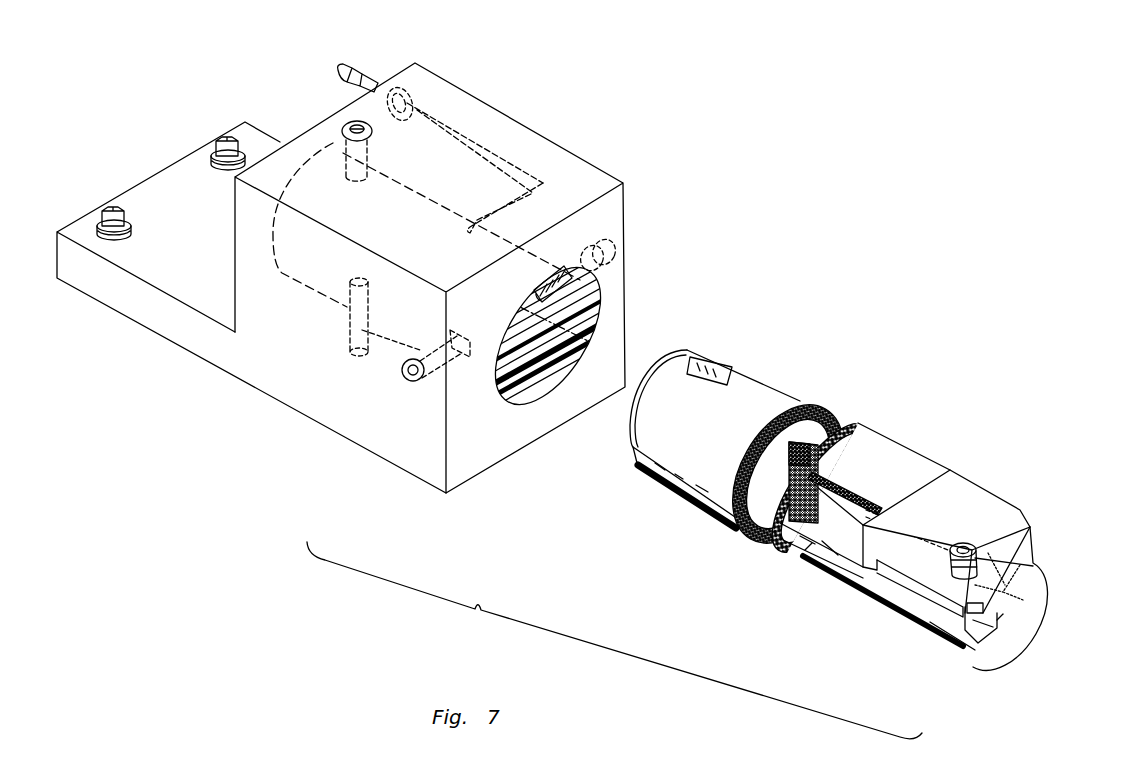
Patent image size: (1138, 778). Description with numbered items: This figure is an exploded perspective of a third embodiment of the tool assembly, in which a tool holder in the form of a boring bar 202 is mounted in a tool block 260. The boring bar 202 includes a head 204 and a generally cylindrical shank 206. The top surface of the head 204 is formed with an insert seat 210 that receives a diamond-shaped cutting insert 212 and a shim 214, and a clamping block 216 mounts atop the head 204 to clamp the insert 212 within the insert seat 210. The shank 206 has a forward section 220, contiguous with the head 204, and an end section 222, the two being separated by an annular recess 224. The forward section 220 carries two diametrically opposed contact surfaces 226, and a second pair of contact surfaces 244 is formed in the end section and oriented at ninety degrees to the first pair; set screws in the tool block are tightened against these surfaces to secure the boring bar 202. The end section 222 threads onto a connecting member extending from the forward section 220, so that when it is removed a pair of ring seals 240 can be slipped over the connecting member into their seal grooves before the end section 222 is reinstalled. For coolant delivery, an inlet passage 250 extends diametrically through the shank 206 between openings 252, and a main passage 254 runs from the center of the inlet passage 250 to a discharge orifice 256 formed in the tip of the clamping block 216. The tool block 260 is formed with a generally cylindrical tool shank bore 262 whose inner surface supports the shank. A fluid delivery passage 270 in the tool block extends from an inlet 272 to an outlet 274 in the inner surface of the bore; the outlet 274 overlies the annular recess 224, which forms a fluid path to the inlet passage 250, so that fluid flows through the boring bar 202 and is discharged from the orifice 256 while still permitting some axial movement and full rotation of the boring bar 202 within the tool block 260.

The boring bar 202 is at (648, 545).
The head 204 is at (1027, 620).
The shank 206 is at (764, 373).
The insert seat 210 is at (930, 620).
The cutting insert 212 is at (1020, 630).
The shim 214 is at (987, 620).
The clamping block 216 is at (968, 493).
The forward section 220 is at (837, 583).
The end section 222 is at (655, 483).
The annular recess 224 is at (860, 412).
The contact surfaces 226 is at (810, 570).
The ring seals 240 is at (783, 553).
The second pair of contact surfaces 244 is at (708, 352).
The inlet passage 250 is at (860, 423).
The openings 252 is at (800, 404).
The main passage 254 is at (847, 497).
The discharge orifice 256 is at (985, 612).
The tool block 260 is at (552, 153).
The tool shank bore 262 is at (583, 310).
The fluid delivery passage 270 is at (440, 120).
The inlet 272 is at (328, 68).
The outlet 274 is at (470, 228).